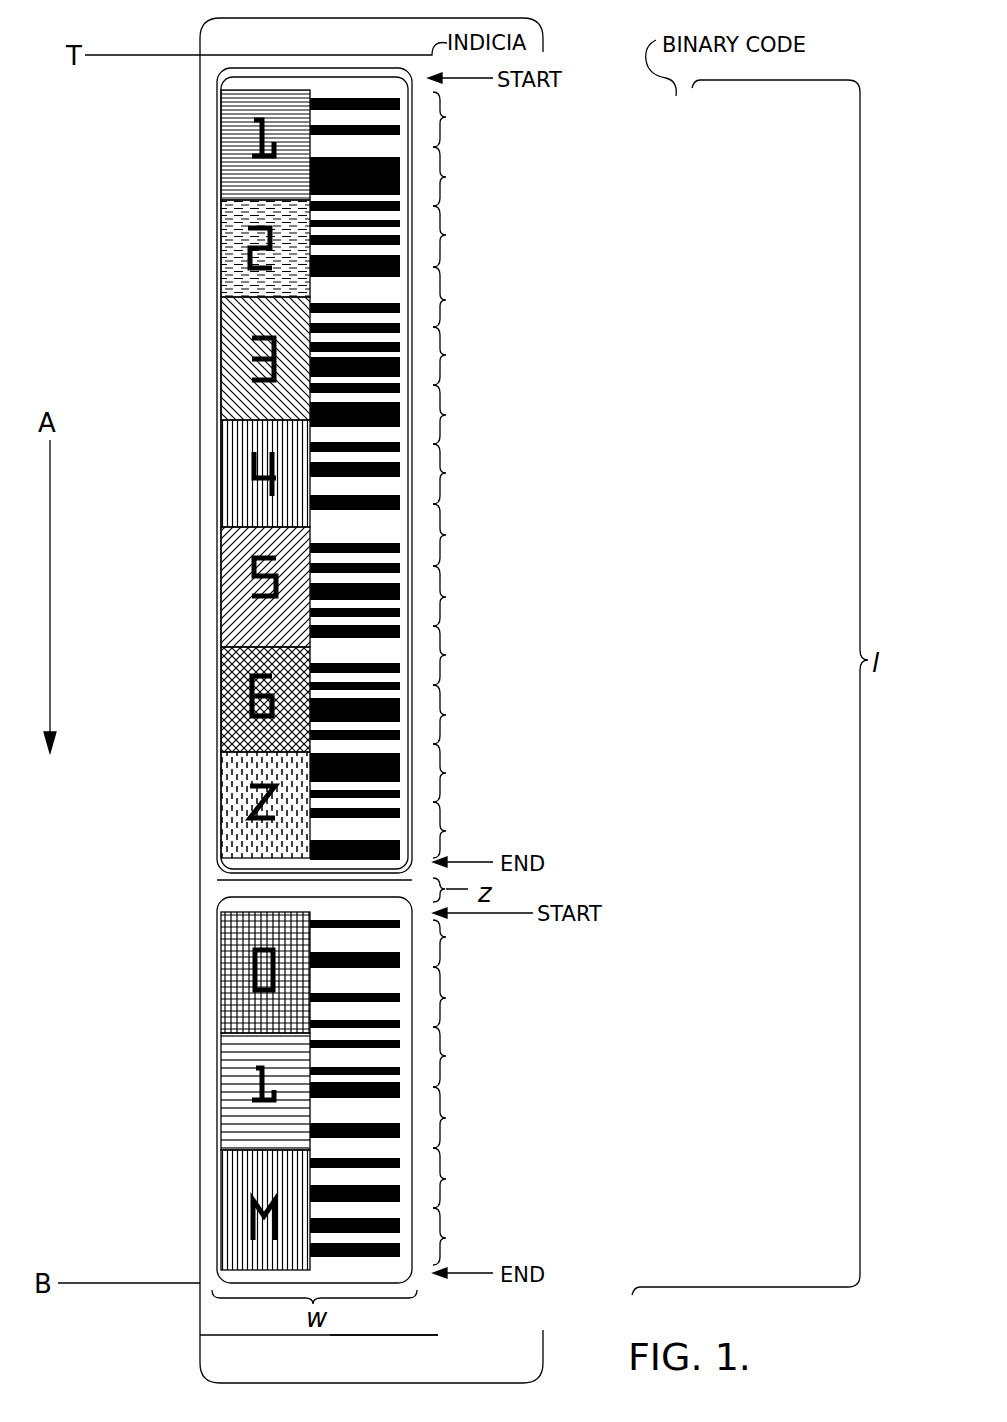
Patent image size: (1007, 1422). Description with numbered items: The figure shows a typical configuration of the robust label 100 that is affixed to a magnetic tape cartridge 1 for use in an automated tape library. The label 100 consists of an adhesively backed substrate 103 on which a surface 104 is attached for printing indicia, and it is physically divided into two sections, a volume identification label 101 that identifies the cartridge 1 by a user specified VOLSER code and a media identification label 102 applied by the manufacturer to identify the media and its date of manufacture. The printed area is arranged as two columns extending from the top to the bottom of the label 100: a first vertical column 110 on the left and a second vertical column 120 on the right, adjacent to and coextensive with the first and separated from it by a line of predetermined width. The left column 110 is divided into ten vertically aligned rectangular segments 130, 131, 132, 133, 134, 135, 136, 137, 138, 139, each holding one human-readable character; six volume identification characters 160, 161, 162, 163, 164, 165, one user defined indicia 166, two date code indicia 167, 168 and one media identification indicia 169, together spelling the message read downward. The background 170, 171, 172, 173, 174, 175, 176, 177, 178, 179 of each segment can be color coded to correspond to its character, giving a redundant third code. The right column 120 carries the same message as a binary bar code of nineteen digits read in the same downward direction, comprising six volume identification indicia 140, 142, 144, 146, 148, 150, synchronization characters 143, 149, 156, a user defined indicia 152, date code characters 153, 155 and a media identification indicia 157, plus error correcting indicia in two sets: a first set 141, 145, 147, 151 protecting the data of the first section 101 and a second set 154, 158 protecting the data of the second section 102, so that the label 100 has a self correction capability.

The magnetic tape cartridge 1 is at (203, 22).
The label 100 is at (228, 878).
The volume identification label 101 is at (241, 468).
The media identification label 102 is at (229, 1150).
The adhesively backed substrate 103 is at (401, 72).
The surface 104 is at (222, 77).
The first vertical column 110 is at (257, 1336).
The second vertical column 120 is at (367, 1336).
The rectangular segment 130 is at (226, 152).
The rectangular segment 131 is at (229, 259).
The rectangular segment 132 is at (226, 364).
The rectangular segment 133 is at (226, 477).
The rectangular segment 134 is at (229, 639).
The rectangular segment 135 is at (229, 717).
The rectangular segment 136 is at (229, 822).
The rectangular segment 137 is at (229, 975).
The rectangular segment 138 is at (229, 1087).
The rectangular segment 139 is at (229, 1259).
The volume identification indicia 140 is at (446, 117).
The error correcting indicia 141 is at (446, 177).
The volume identification indicia 142 is at (446, 235).
The synchronization character 143 is at (446, 300).
The volume identification indicia 144 is at (446, 355).
The error correcting indicia 145 is at (446, 415).
The volume identification indicia 146 is at (446, 473).
The error correcting indicia 147 is at (446, 535).
The volume identification indicia 148 is at (446, 597).
The synchronization character 149 is at (446, 655).
The volume identification indicia 150 is at (446, 715).
The error correcting indicia 151 is at (446, 773).
The user defined indicia 152 is at (446, 831).
The date code character 153 is at (446, 937).
The error correcting indicia 154 is at (446, 998).
The date code character 155 is at (446, 1056).
The synchronization character 156 is at (446, 1118).
The media identification indicia 157 is at (446, 1179).
The error correcting indicia 158 is at (446, 1238).
The human-readable character 160 is at (226, 119).
The human-readable character 161 is at (229, 225).
The human-readable character 162 is at (229, 332).
The human-readable character 163 is at (229, 442).
The human-readable character 164 is at (229, 553).
The human-readable character 165 is at (229, 677).
The user defined indicia 166 is at (229, 788).
The date code indicia 167 is at (229, 1007).
The date code indicia 168 is at (229, 1117).
The media identification code indicia 169 is at (229, 1225).
The background 170 is at (226, 187).
The background 171 is at (229, 294).
The background 172 is at (229, 404).
The background 173 is at (229, 514).
The background 174 is at (232, 600).
The background 175 is at (229, 750).
The background 176 is at (229, 855).
The background 177 is at (229, 940).
The background 178 is at (229, 1052).
The background 179 is at (229, 1194).